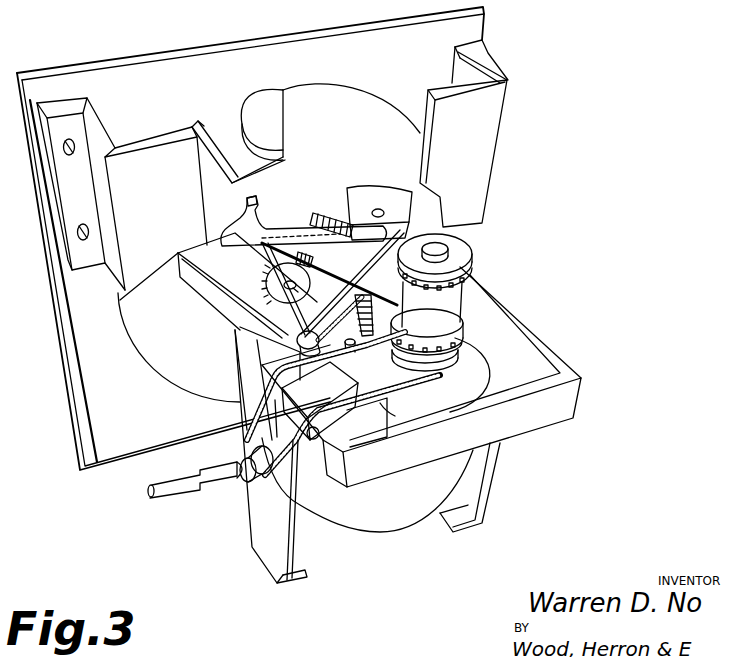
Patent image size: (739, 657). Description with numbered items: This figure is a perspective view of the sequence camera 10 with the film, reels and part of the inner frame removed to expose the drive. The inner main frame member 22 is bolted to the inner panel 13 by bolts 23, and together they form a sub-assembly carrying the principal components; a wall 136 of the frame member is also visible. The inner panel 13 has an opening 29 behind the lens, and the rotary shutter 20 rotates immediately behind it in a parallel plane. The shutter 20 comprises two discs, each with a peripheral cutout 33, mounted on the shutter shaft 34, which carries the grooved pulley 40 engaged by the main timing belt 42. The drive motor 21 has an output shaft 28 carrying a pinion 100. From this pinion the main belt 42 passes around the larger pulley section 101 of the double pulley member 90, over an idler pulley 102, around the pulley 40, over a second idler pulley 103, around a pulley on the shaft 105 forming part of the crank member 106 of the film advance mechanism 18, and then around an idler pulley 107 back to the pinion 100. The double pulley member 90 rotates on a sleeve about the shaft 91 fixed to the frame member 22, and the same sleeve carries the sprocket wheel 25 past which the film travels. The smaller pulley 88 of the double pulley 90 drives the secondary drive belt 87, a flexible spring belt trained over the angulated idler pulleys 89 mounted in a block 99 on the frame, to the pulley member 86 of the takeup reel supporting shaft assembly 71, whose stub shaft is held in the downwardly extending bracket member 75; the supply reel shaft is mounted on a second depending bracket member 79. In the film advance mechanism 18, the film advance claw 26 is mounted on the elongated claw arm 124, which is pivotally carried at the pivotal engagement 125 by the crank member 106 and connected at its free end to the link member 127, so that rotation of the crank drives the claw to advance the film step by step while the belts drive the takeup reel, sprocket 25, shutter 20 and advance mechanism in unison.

The sequence camera 10 is at (655, 155).
The inner panel 13 is at (226, 57).
The film advance mechanism 18 is at (368, 174).
The rotary shutter 20 is at (338, 105).
The drive motor 21 is at (393, 513).
The inner main frame member 22 is at (230, 322).
The bolts 23 is at (72, 157).
The sprocket wheel 25 is at (460, 258).
The film advance claw 26 is at (255, 202).
The output shaft 28 is at (380, 318).
The opening 29 is at (283, 88).
The peripheral cutout 33 is at (204, 126).
The shutter shaft 34 is at (300, 286).
The grooved pulley 40 is at (288, 296).
The main timing belt 42 is at (393, 300).
The takeup reel supporting shaft assembly 71 is at (188, 499).
The downwardly extending bracket member 75 is at (268, 543).
The second depending bracket member 79 is at (497, 472).
The pulley member 86 is at (254, 490).
The secondary drive belt 87 is at (281, 463).
The smaller pulley 88 is at (438, 366).
The angulated idler pulleys 89 is at (306, 433).
The double pulley member 90 is at (478, 373).
The shaft 91 is at (440, 245).
The block 99 is at (315, 393).
The pinion 100 is at (333, 293).
The larger pulley section 101 is at (468, 343).
The idler pulley 102 is at (280, 247).
The second idler pulley 103 is at (333, 212).
The shaft 105 is at (380, 208).
The crank member 106 is at (420, 184).
The idler pulley 107 is at (278, 354).
The claw arm 124 is at (243, 224).
The pivotal engagement 125 is at (401, 213).
The link member 127 is at (238, 294).
The wall 136 is at (156, 208).